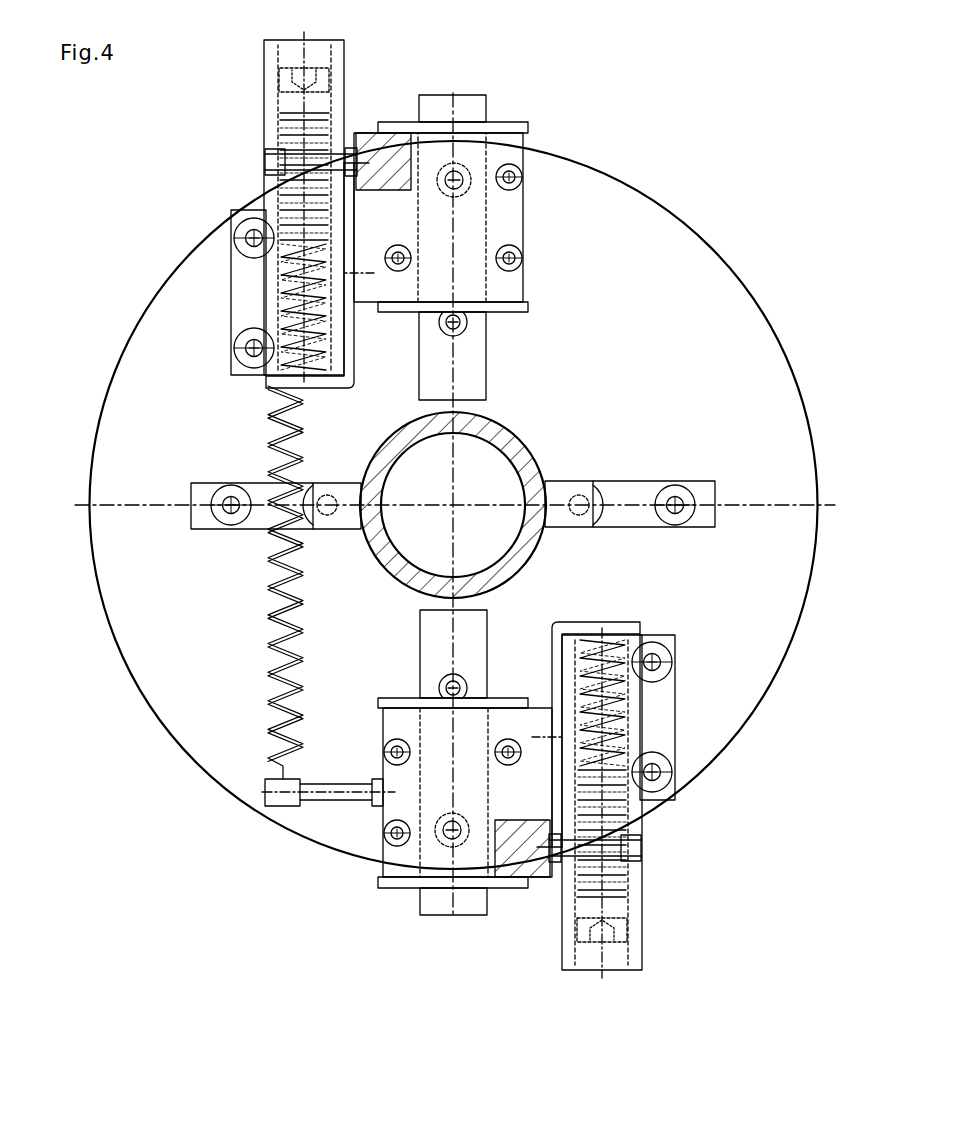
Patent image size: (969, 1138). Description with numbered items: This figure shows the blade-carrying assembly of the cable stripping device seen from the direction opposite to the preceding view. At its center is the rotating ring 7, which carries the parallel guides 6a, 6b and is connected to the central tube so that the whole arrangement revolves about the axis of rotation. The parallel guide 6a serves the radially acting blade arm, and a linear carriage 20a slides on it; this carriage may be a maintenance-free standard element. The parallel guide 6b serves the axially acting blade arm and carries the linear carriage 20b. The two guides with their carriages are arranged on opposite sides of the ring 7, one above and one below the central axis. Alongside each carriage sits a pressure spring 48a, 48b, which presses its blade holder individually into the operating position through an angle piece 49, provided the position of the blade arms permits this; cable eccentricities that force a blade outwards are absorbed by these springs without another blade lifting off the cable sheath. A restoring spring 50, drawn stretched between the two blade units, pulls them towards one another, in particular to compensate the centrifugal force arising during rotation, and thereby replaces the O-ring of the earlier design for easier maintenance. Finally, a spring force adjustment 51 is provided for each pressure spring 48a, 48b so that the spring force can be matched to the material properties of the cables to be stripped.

The rotating ring 7 is at (697, 384).
The linear carriage 20a is at (510, 117).
The linear carriage 20b is at (396, 884).
The parallel guide 6a is at (478, 352).
The parallel guide 6b is at (427, 648).
The pressure spring 48a is at (283, 312).
The pressure spring 48b is at (617, 803).
The angle piece 49 is at (325, 392).
The restoring spring 50 is at (268, 686).
The spring force adjustment 51 is at (325, 98).